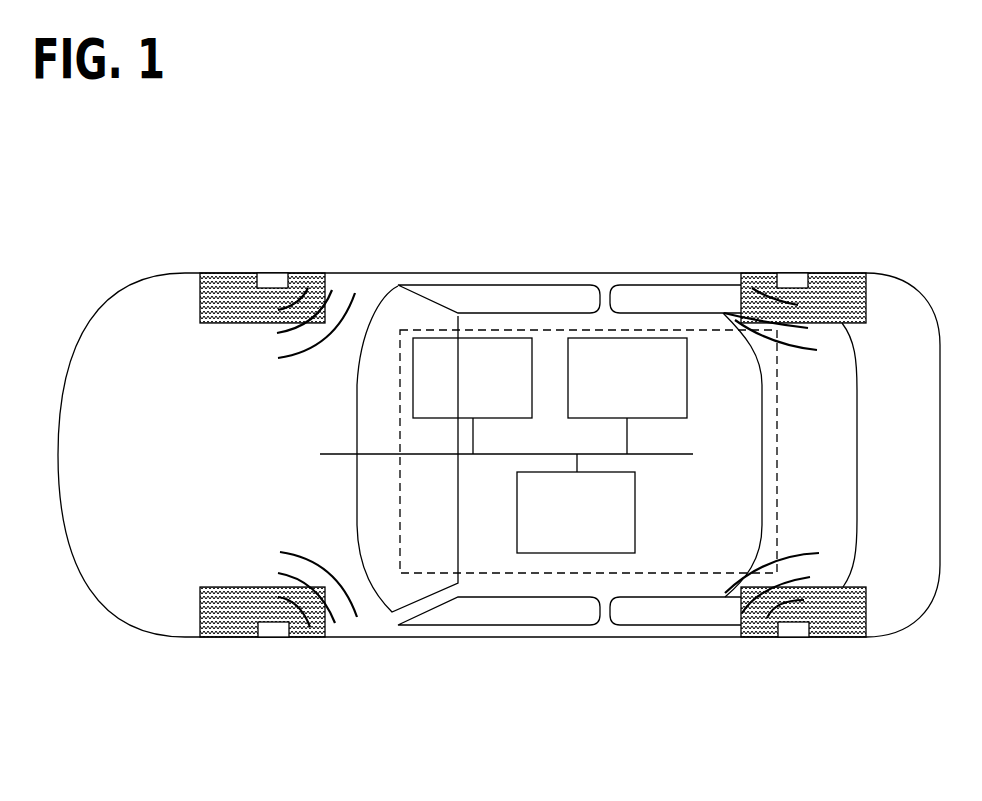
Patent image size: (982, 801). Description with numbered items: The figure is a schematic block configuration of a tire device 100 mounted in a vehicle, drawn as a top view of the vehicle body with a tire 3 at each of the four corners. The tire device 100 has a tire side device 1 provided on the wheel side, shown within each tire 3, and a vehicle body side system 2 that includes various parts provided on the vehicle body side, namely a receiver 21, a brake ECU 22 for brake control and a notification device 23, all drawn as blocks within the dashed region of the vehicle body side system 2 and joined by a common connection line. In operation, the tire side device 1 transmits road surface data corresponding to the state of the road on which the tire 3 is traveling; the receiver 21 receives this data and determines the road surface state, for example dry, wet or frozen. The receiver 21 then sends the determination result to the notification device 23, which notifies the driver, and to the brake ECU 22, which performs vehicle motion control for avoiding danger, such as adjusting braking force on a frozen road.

The tire device 100 is at (410, 242).
The tire side device 1 is at (268, 272).
The vehicle body side system 2 is at (707, 330).
The tire 3 is at (200, 300).
The receiver 21 is at (578, 555).
The brake ECU 22 is at (638, 338).
The notification device 23 is at (487, 338).